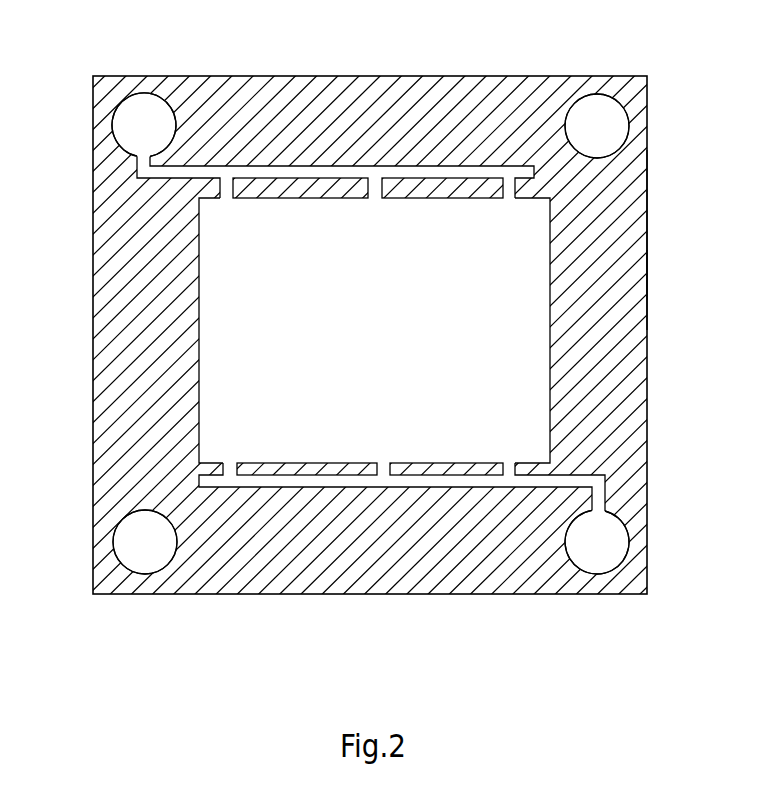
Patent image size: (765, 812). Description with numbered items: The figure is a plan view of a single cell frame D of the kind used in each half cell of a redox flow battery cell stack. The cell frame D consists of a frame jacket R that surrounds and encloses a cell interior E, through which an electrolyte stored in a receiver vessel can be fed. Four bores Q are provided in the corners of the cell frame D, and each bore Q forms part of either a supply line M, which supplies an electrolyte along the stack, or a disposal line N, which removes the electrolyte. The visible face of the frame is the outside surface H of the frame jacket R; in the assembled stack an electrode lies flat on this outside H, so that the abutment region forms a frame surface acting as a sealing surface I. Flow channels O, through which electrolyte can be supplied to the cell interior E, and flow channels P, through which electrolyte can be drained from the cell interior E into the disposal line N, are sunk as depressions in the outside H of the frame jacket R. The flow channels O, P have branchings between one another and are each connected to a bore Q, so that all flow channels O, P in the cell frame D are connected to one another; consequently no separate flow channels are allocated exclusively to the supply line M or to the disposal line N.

The cell frame D is at (413, 90).
The frame jacket R is at (289, 74).
The outside surface H is at (626, 222).
The sealing surface I is at (638, 289).
The supply line M is at (142, 108).
The disposal line N is at (143, 560).
The bore Q is at (110, 110).
The flow channel O is at (226, 193).
The cell interior E is at (466, 337).
The flow channel P is at (231, 462).